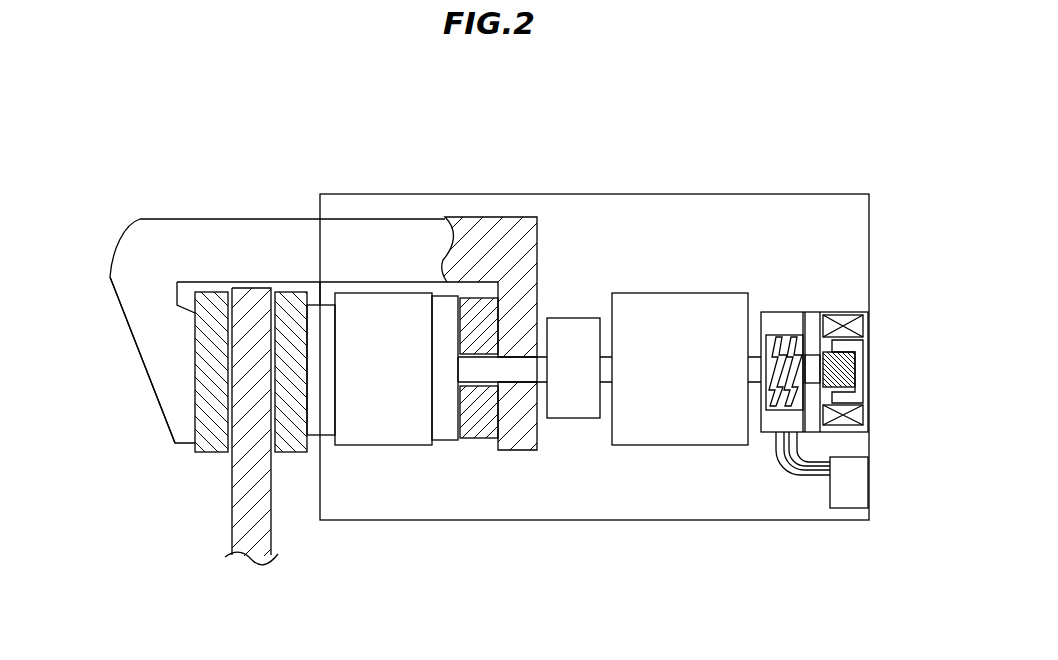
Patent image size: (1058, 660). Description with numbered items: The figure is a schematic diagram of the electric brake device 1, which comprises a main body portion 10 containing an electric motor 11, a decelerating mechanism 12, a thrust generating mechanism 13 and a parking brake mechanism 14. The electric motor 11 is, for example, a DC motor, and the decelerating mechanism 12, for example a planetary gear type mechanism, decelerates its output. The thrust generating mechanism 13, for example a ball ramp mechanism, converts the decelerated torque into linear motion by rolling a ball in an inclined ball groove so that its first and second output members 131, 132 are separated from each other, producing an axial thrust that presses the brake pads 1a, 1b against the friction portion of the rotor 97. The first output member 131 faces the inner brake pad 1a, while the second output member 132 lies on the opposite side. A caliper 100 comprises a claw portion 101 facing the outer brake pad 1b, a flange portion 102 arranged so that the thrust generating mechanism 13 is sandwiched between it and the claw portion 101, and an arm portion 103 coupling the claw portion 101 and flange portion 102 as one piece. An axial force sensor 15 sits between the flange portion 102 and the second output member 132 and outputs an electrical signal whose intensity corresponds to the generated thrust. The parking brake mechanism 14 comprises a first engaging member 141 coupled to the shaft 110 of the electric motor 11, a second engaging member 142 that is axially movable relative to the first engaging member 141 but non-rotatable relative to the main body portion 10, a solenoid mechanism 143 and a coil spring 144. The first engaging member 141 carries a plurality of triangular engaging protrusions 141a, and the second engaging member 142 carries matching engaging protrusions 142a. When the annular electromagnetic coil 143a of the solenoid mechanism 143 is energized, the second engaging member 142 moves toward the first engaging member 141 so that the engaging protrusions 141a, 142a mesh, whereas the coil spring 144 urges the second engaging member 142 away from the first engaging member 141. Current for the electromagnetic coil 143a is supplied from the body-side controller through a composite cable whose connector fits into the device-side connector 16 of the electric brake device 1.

The electric brake device 1 is at (307, 146).
The main body portion 10 is at (823, 193).
The caliper 100 is at (200, 213).
The claw portion 101 is at (160, 373).
The arm portion 103 is at (340, 227).
The brake pad 1a is at (289, 445).
The brake pad 1b is at (208, 442).
The rotor 97 is at (240, 520).
The thrust generating mechanism 13 is at (392, 447).
The first output member 131 is at (325, 423).
The second output member 132 is at (441, 425).
The flange portion 102 is at (516, 428).
The axial force sensor 15 is at (471, 312).
The decelerating mechanism 12 is at (568, 318).
The electric motor 11 is at (677, 293).
The shaft 110 is at (757, 372).
The parking brake mechanism 14 is at (847, 431).
The first engaging member 141 is at (770, 333).
The engaging protrusions 141a is at (783, 333).
The second engaging member 142 is at (806, 330).
The engaging protrusions 142a is at (797, 335).
The solenoid mechanism 143 is at (857, 308).
The electromagnetic coil 143a is at (862, 327).
The coil spring 144 is at (855, 368).
The device-side connector 16 is at (850, 508).